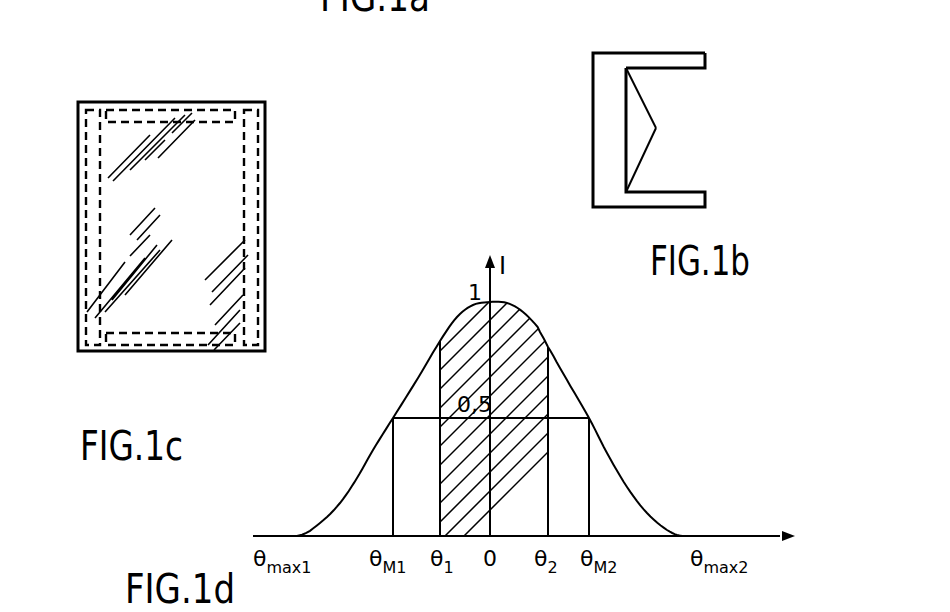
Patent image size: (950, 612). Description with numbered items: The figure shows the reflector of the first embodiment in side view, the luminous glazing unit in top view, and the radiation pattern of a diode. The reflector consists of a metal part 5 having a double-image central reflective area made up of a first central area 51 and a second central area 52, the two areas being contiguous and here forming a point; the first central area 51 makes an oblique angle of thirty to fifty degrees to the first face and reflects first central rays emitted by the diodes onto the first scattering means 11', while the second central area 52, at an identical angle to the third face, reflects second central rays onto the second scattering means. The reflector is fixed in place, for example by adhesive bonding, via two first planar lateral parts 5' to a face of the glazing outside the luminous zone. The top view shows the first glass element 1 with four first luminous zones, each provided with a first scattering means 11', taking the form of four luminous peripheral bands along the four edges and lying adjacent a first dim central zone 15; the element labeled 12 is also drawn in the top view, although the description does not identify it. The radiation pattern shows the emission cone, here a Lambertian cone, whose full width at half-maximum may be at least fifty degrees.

In FIG. 1C, the first glass element 1 is at (272, 237).
In FIG. 1C, the first scattering means 11' is at (175, 234).
In FIG. 1C, the mirror plate 12 is at (143, 290).
In FIG. 1C, the first dim central zone 15 is at (217, 163).
In FIG. 1B, the metal part 5 is at (612, 130).
In FIG. 1B, the first planar lateral parts 5' is at (663, 37).
In FIG. 1B, the first central area 51 is at (646, 104).
In FIG. 1B, the second central area 52 is at (643, 163).